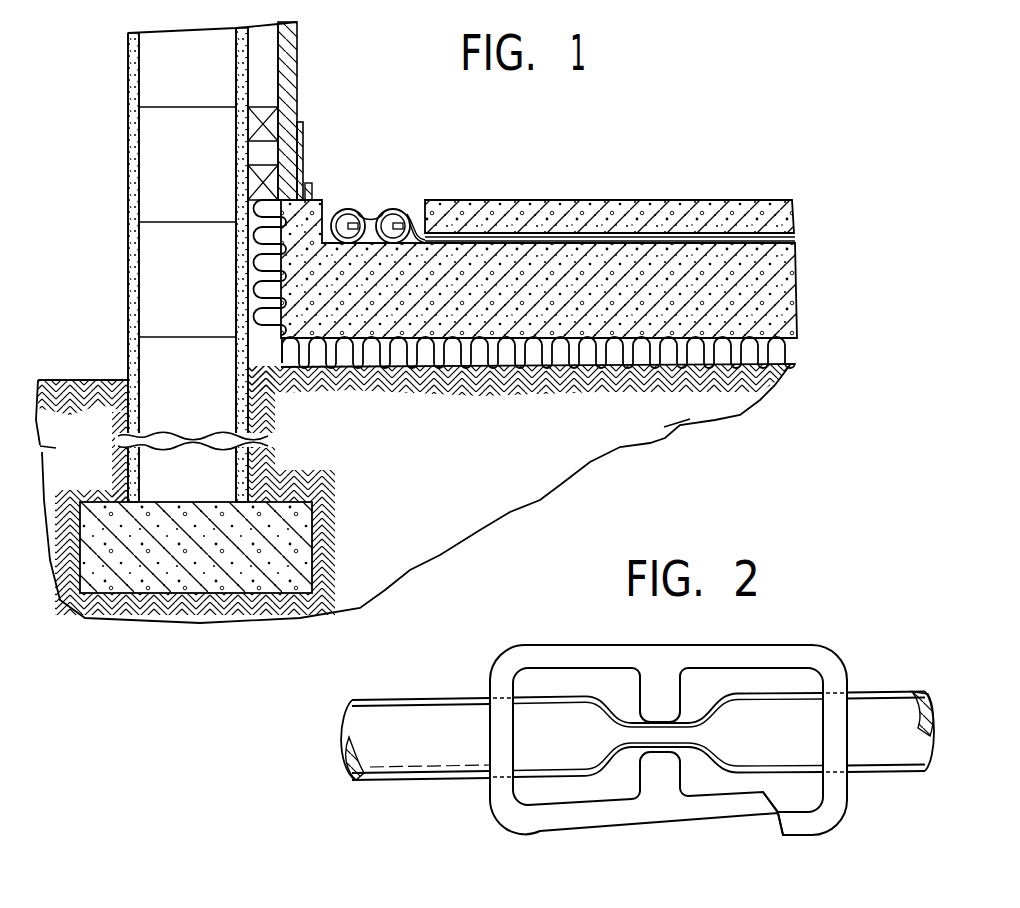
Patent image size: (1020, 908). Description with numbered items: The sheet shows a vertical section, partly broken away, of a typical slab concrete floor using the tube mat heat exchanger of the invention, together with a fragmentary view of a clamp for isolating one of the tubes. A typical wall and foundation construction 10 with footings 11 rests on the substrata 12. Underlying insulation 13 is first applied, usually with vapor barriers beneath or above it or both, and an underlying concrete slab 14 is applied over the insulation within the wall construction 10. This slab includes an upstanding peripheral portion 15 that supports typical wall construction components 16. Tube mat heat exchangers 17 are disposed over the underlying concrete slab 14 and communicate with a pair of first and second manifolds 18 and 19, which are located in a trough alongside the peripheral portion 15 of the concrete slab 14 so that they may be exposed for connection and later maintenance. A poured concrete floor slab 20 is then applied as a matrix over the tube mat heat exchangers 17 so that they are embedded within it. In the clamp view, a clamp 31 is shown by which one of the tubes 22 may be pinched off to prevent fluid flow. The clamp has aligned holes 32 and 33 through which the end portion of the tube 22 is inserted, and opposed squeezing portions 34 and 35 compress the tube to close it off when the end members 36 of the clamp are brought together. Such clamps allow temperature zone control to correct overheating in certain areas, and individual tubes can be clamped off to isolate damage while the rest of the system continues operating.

In FIG. 1, the wall and foundation construction 10 is at (194, 175).
In FIG. 1, the footings 11 is at (314, 533).
In FIG. 1, the substrata 12 is at (511, 461).
In FIG. 1, the underlying insulation 13 is at (258, 277).
In FIG. 1, the underlying concrete slab 14 is at (784, 277).
In FIG. 1, the upstanding peripheral portion 15 is at (318, 200).
In FIG. 1, the wall construction components 16 is at (315, 111).
In FIG. 1, the tube mat heat exchangers 17 is at (783, 237).
In FIG. 1, the first manifold 18 is at (391, 209).
In FIG. 1, the second manifold 19 is at (342, 209).
In FIG. 1, the poured concrete floor slab 20 is at (684, 201).
In FIG. 1, the tube 22 is at (416, 222).
In FIG. 2, the tube 22 is at (401, 757).
In FIG. 2, the clamp 31 is at (665, 764).
In FIG. 2, the hole 32 is at (471, 695).
In FIG. 2, the hole 33 is at (855, 691).
In FIG. 2, the squeezing portion 34 is at (638, 762).
In FIG. 2, the squeezing portion 35 is at (644, 709).
In FIG. 2, the end members 36 is at (781, 822).